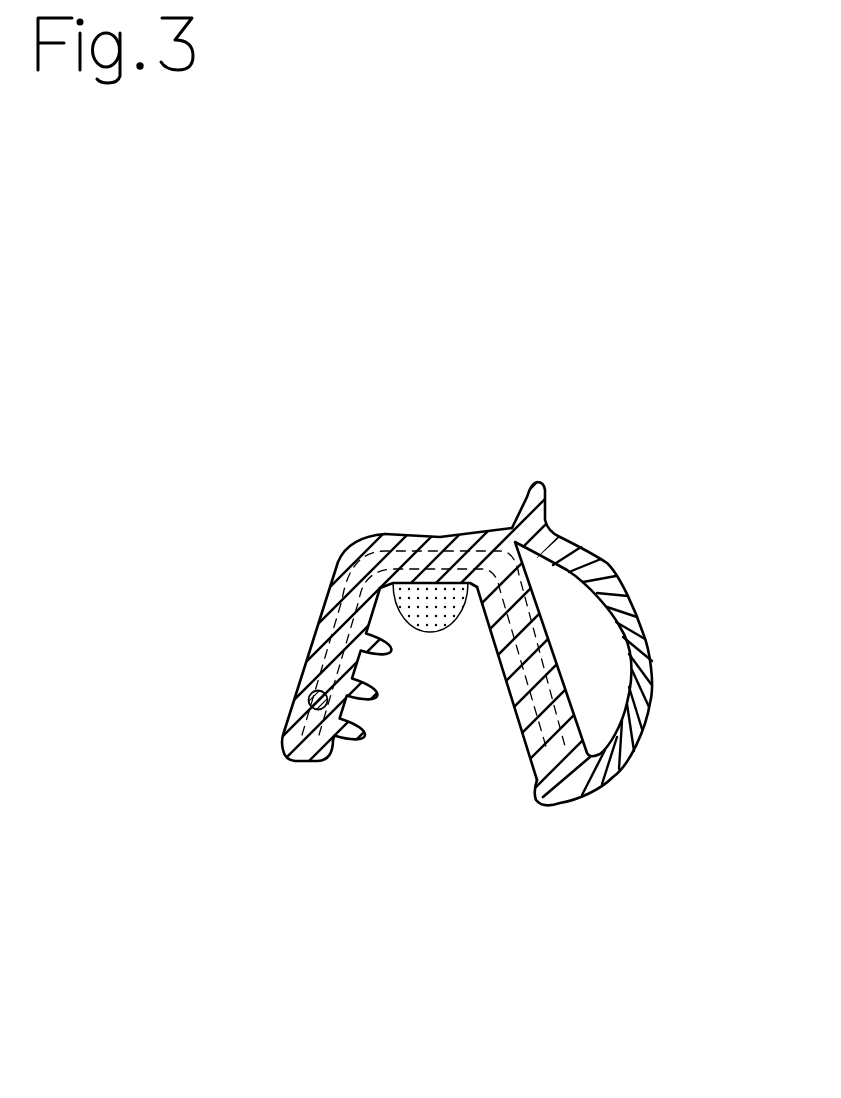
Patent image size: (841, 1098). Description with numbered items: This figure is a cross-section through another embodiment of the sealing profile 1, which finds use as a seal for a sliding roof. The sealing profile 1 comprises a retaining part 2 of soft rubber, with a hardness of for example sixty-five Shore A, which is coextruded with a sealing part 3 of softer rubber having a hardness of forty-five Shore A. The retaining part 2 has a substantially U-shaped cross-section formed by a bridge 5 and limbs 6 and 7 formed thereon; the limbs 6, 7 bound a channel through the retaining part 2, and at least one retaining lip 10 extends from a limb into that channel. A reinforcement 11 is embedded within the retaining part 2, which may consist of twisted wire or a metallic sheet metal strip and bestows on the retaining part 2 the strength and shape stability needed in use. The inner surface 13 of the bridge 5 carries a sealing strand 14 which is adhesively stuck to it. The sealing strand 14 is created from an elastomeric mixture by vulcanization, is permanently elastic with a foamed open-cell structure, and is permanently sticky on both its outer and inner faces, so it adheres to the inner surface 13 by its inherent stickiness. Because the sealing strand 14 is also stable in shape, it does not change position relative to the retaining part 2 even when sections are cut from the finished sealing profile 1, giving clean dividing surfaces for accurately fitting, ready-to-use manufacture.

The sealing profile 1 is at (277, 870).
The retaining part 2 is at (283, 668).
The sealing part 3 is at (650, 605).
The bridge 5 is at (423, 536).
The limb 6 is at (290, 703).
The limb 7 is at (515, 750).
The retaining lip 10 is at (355, 742).
The reinforcement 11 is at (315, 618).
The inner surface 13 is at (388, 590).
The sealing strand 14 is at (461, 588).